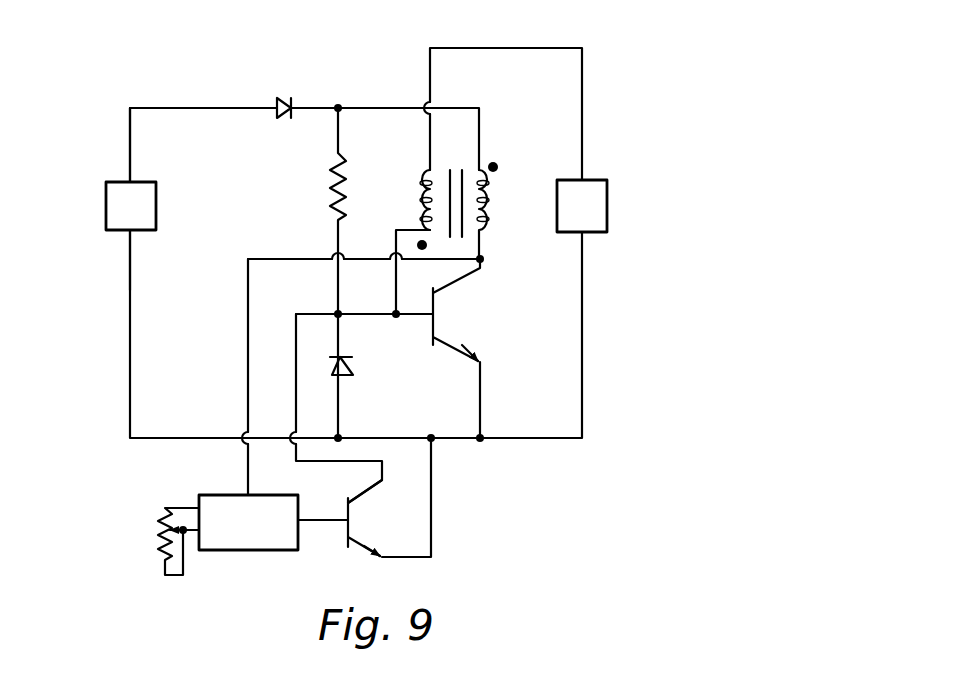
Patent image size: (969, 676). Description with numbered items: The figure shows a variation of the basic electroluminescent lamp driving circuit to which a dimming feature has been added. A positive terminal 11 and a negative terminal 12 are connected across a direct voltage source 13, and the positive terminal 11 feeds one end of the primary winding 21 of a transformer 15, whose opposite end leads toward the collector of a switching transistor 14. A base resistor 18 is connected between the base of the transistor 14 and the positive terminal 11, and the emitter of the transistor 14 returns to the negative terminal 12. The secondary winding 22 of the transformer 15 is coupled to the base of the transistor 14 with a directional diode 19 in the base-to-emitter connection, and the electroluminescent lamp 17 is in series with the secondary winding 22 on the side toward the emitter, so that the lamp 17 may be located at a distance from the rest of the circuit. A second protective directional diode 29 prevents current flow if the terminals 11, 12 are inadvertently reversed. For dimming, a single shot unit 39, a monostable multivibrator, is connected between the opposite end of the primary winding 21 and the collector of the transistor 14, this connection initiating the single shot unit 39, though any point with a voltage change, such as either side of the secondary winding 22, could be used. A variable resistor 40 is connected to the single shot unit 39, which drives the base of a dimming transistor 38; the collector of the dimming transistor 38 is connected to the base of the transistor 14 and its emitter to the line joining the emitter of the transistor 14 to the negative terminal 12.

The positive terminal 11 is at (122, 178).
The negative terminal 12 is at (126, 232).
The direct voltage source 13 is at (106, 211).
The transistor 14 is at (448, 318).
The transformer 15 is at (459, 215).
The electroluminescent lamp 17 is at (607, 208).
The base resistor 18 is at (336, 198).
The directional diode 19 is at (356, 369).
The primary winding 21 is at (489, 200).
The secondary winding 22 is at (425, 202).
The second protective directional diode 29 is at (284, 96).
The dimming transistor 38 is at (357, 519).
The single shot unit 39 is at (253, 550).
The variable resistor 40 is at (150, 538).